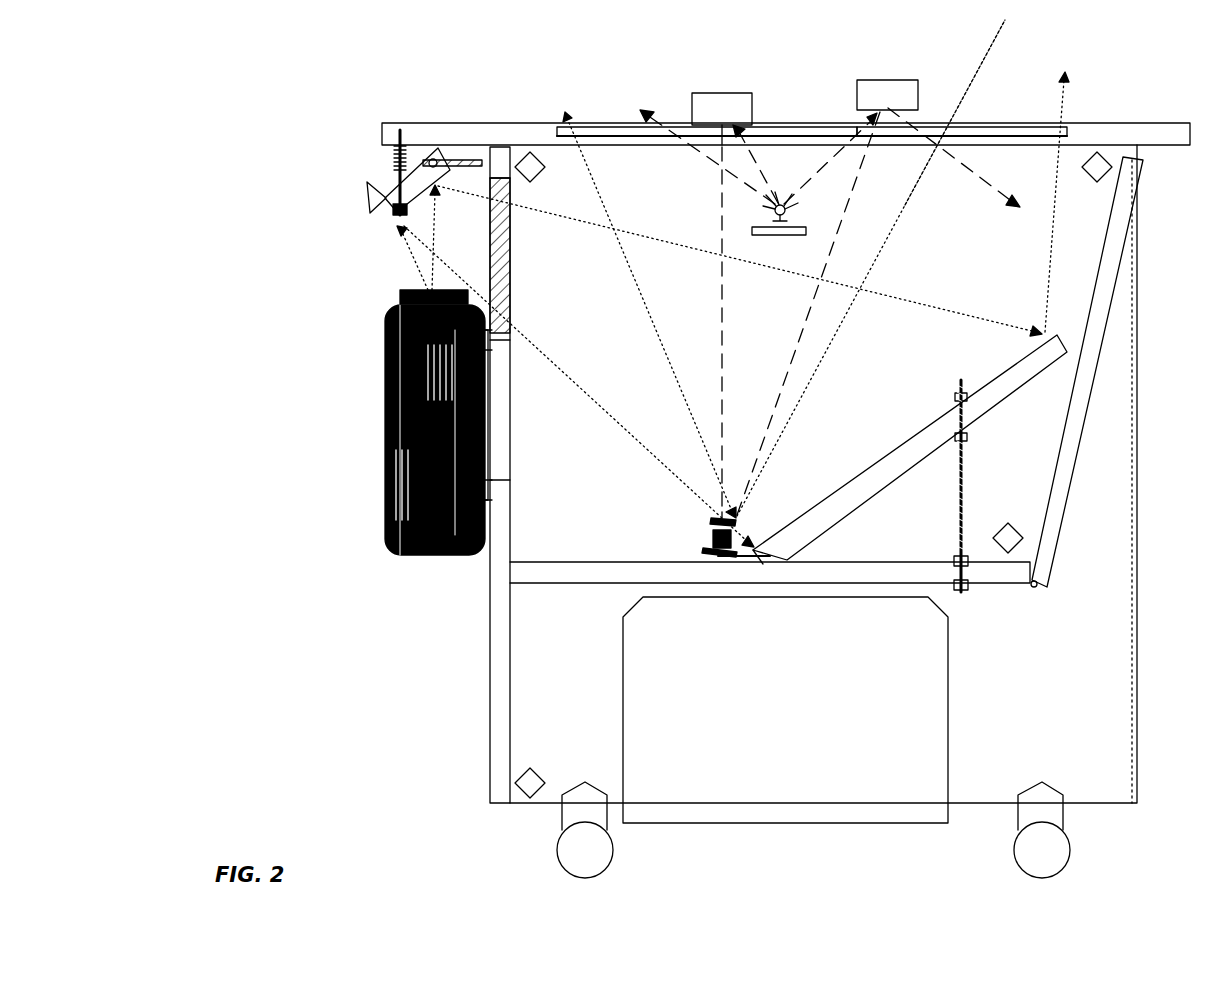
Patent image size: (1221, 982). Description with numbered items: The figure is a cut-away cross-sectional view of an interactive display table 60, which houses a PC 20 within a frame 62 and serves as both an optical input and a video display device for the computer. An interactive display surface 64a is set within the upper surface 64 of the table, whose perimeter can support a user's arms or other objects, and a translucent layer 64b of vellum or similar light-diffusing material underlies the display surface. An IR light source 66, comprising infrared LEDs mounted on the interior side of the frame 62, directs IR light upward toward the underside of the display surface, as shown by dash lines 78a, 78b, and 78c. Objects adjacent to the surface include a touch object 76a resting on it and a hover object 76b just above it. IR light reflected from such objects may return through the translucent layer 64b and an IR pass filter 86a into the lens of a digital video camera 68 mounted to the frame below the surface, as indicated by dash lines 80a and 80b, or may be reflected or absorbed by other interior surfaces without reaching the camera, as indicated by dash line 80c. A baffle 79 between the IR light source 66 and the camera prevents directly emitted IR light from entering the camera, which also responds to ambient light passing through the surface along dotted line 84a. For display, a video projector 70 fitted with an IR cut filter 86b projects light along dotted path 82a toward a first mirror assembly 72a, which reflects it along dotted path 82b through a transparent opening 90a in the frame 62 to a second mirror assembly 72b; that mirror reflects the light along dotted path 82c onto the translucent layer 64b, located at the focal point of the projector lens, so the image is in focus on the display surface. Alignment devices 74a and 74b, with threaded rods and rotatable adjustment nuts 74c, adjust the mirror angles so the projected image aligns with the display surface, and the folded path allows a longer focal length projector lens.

The PC 20 is at (948, 702).
The interactive display table 60 is at (385, 625).
The frame 62 is at (490, 692).
The upper surface 64 is at (525, 123).
The interactive display surface 64a is at (612, 123).
The translucent layer 64b is at (984, 123).
The IR light source 66 is at (771, 211).
The digital video camera 68 is at (710, 532).
The video projector 70 is at (386, 395).
The first mirror assembly 72a is at (386, 217).
The second mirror assembly 72b is at (872, 454).
The alignment device 74a is at (393, 203).
The alignment device 74b is at (964, 464).
The rotatable adjustment nuts 74c is at (386, 216).
The touch object 76a is at (707, 93).
The hover object 76b is at (866, 80).
The dash line 78a is at (696, 150).
The dash line 78b is at (760, 174).
The dash line 78c is at (842, 149).
The baffle 79 is at (778, 235).
The dash line 80a is at (706, 286).
The dash line 80b is at (795, 330).
The dash line 80c is at (978, 179).
The dotted path 82a is at (432, 240).
The dotted path 82b is at (656, 410).
The dotted path 82c is at (630, 260).
The dotted line 84a is at (994, 30).
The IR pass filter 86a is at (705, 518).
The IR cut filter 86b is at (400, 298).
The transparent opening 90a is at (510, 297).